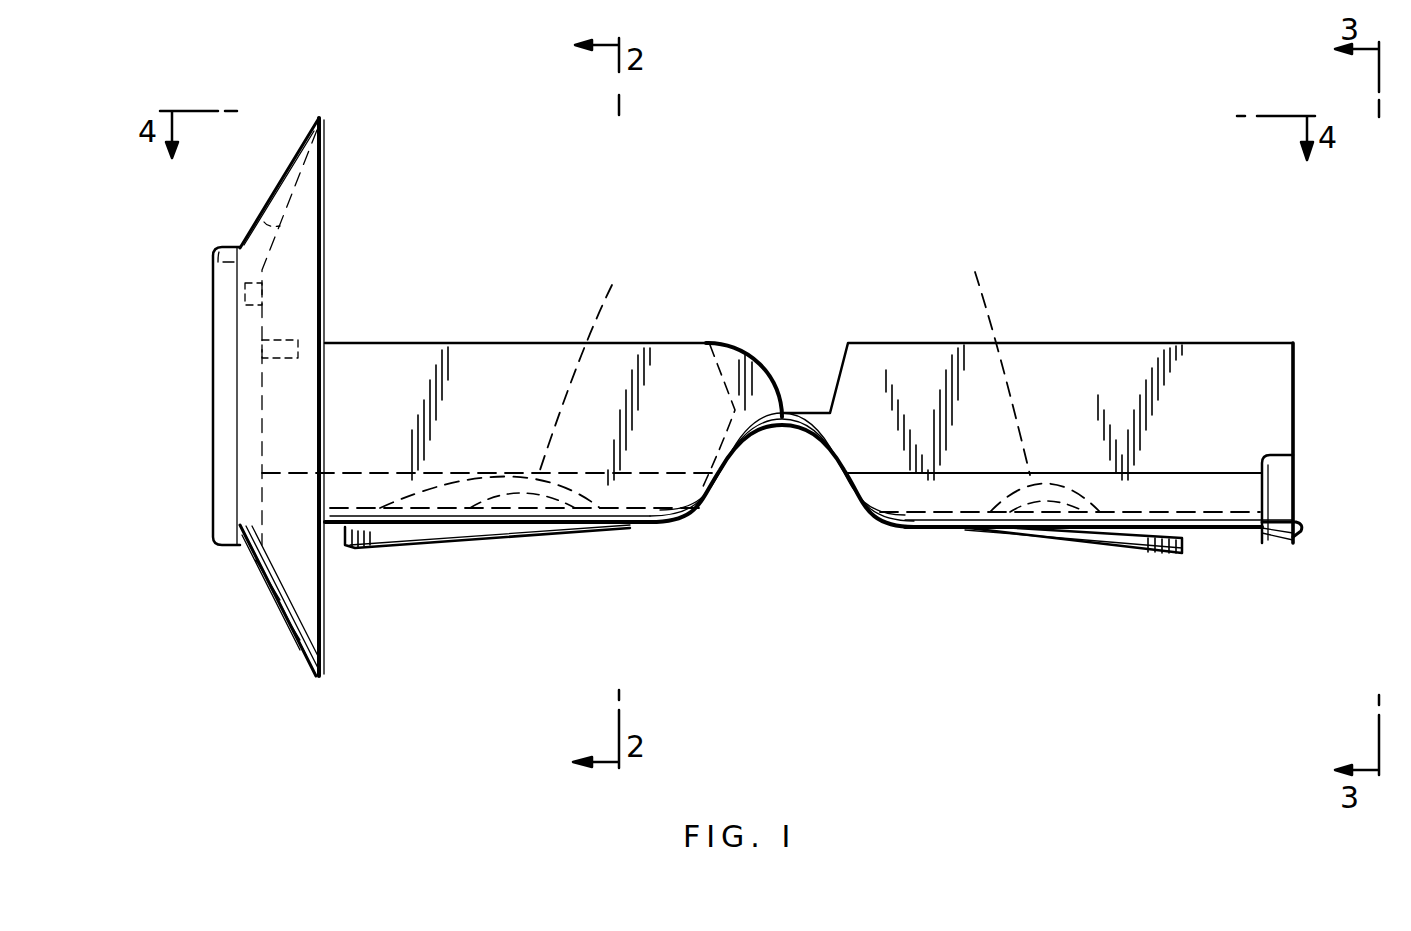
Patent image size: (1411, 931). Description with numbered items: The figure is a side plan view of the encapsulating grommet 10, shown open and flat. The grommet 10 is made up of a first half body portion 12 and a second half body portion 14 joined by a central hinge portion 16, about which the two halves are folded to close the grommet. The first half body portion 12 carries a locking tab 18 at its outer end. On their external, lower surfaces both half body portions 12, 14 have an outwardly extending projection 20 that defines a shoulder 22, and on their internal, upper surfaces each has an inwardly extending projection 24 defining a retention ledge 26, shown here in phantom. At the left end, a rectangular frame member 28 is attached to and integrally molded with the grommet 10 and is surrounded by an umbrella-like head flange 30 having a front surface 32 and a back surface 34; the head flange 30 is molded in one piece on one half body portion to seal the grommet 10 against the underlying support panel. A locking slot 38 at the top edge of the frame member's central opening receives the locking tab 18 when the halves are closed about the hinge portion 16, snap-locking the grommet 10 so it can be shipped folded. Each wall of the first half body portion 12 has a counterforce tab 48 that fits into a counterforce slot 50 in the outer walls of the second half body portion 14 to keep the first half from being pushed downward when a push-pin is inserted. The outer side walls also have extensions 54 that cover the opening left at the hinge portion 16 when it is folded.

The encapsulating grommet 10 is at (840, 222).
The first half body portion 12 is at (1063, 370).
The second half body portion 14 is at (495, 355).
The hinge portion 16 is at (790, 428).
The locking tab 18 is at (1305, 528).
The outwardly extending projection 20 is at (380, 547).
The shoulder 22 is at (348, 530).
The inwardly extending projection 24 is at (502, 527).
The retention ledge 26 is at (785, 362).
The rectangular frame member 28 is at (225, 368).
The head flange 30 is at (319, 118).
The front surface 32 is at (283, 560).
The back surface 34 is at (277, 226).
The locking slot 38 is at (262, 290).
The counterforce tab 48 is at (1280, 468).
The counterforce slot 50 is at (290, 338).
The extension 54 is at (737, 362).